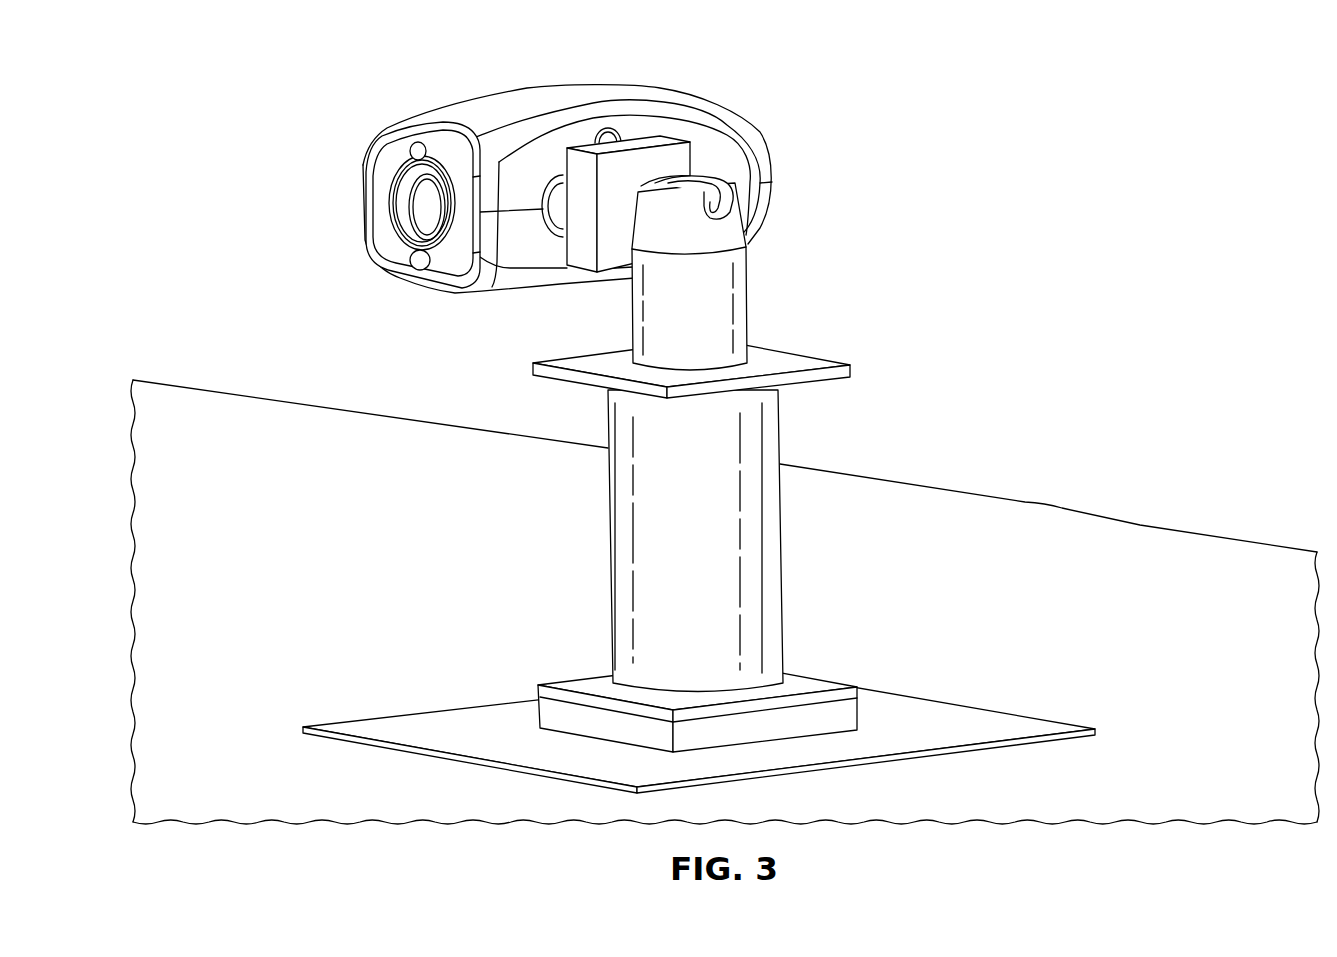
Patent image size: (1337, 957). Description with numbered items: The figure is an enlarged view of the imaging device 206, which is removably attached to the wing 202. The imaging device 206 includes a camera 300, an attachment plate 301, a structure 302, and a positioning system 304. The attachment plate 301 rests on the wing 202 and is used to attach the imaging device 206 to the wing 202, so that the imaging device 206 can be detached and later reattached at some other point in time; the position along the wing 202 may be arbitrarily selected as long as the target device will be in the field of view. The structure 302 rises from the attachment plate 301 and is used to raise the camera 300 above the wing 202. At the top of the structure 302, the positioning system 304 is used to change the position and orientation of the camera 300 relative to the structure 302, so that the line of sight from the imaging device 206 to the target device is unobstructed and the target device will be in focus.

The wing 202 is at (1025, 505).
The imaging device 206 is at (790, 283).
The camera 300 is at (528, 92).
The attachment plate 301 is at (977, 717).
The structure 302 is at (608, 517).
The positioning system 304 is at (692, 126).